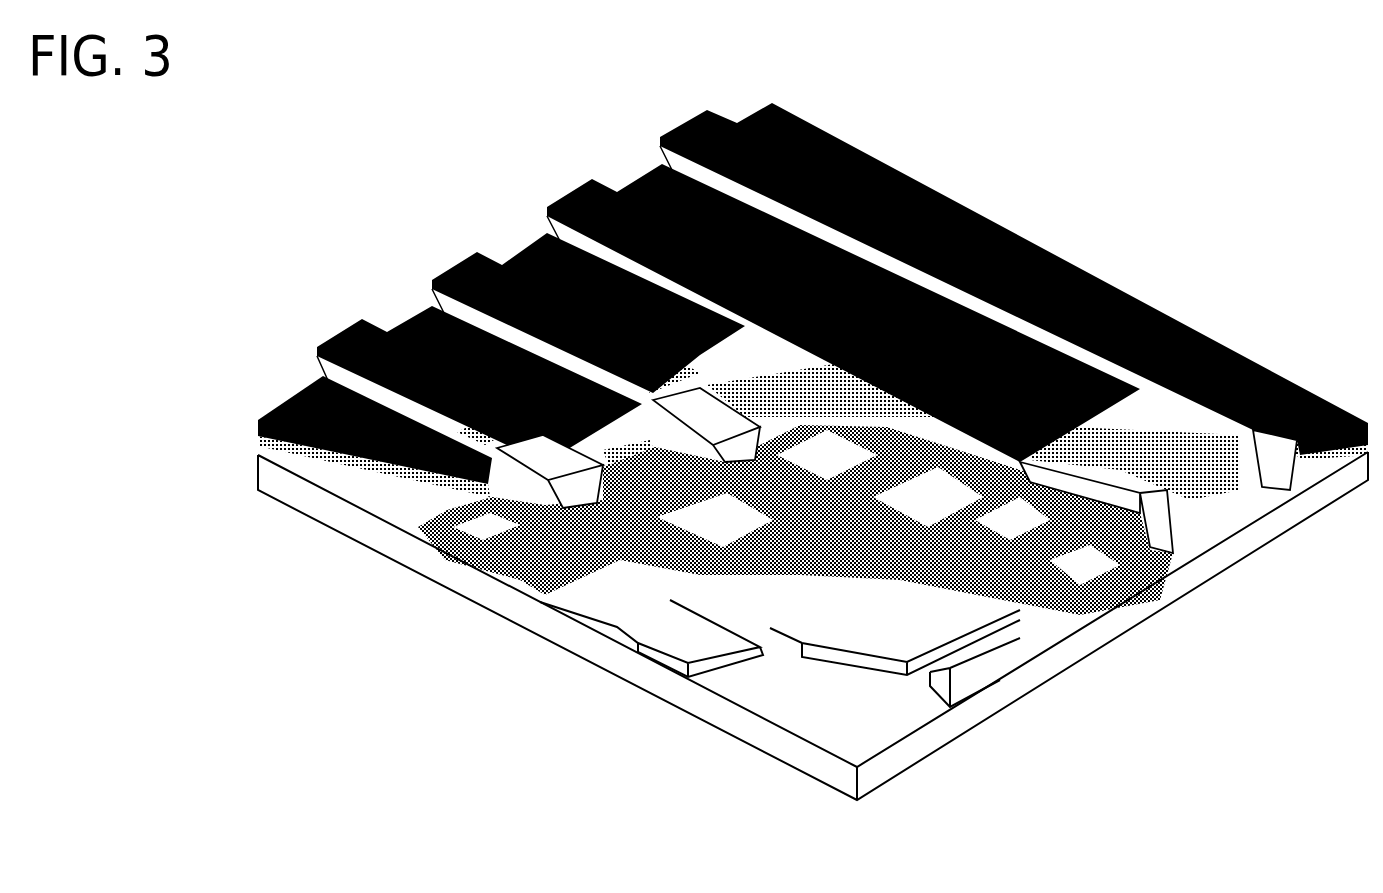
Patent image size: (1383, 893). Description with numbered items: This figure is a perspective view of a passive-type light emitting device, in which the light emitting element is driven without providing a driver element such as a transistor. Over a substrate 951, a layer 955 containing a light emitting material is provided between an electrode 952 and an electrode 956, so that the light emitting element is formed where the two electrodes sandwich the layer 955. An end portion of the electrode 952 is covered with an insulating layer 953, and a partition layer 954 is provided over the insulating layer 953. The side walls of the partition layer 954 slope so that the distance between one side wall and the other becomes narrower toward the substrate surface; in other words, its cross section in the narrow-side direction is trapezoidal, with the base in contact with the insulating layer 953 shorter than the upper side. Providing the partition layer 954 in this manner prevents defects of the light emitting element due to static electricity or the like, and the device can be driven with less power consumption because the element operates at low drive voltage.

The substrate 951 is at (810, 722).
The electrode 952 is at (685, 640).
The insulating layer 953 is at (600, 560).
The partition layer 954 is at (537, 490).
The layer containing a light emitting material 955 is at (400, 494).
The electrode 956 is at (258, 432).